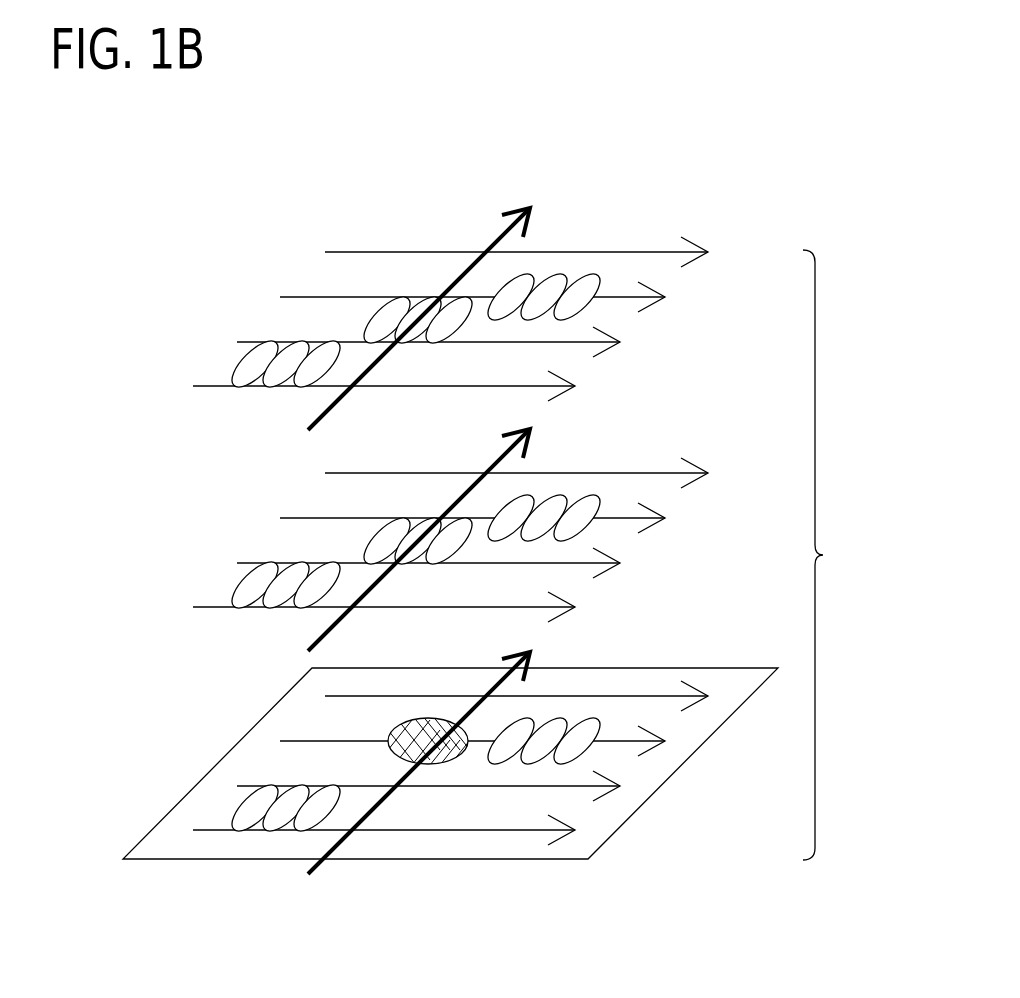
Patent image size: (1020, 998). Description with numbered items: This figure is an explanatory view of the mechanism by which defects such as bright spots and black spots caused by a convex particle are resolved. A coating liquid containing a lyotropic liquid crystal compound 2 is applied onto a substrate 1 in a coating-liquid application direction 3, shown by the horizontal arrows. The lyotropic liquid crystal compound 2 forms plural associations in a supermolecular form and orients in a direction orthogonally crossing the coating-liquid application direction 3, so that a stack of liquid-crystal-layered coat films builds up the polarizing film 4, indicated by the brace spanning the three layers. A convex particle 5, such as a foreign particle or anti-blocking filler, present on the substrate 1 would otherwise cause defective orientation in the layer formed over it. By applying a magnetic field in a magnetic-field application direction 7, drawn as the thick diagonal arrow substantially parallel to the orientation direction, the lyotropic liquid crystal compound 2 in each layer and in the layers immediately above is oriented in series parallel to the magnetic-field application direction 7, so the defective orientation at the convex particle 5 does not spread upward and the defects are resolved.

The substrate 1 is at (593, 817).
The lyotropic liquid crystal compound 2 is at (242, 832).
The coating-liquid application direction 3 is at (393, 832).
The polarizing film 4 is at (519, 534).
The convex particle 5 is at (455, 761).
The magnetic-field application direction 7 is at (317, 873).